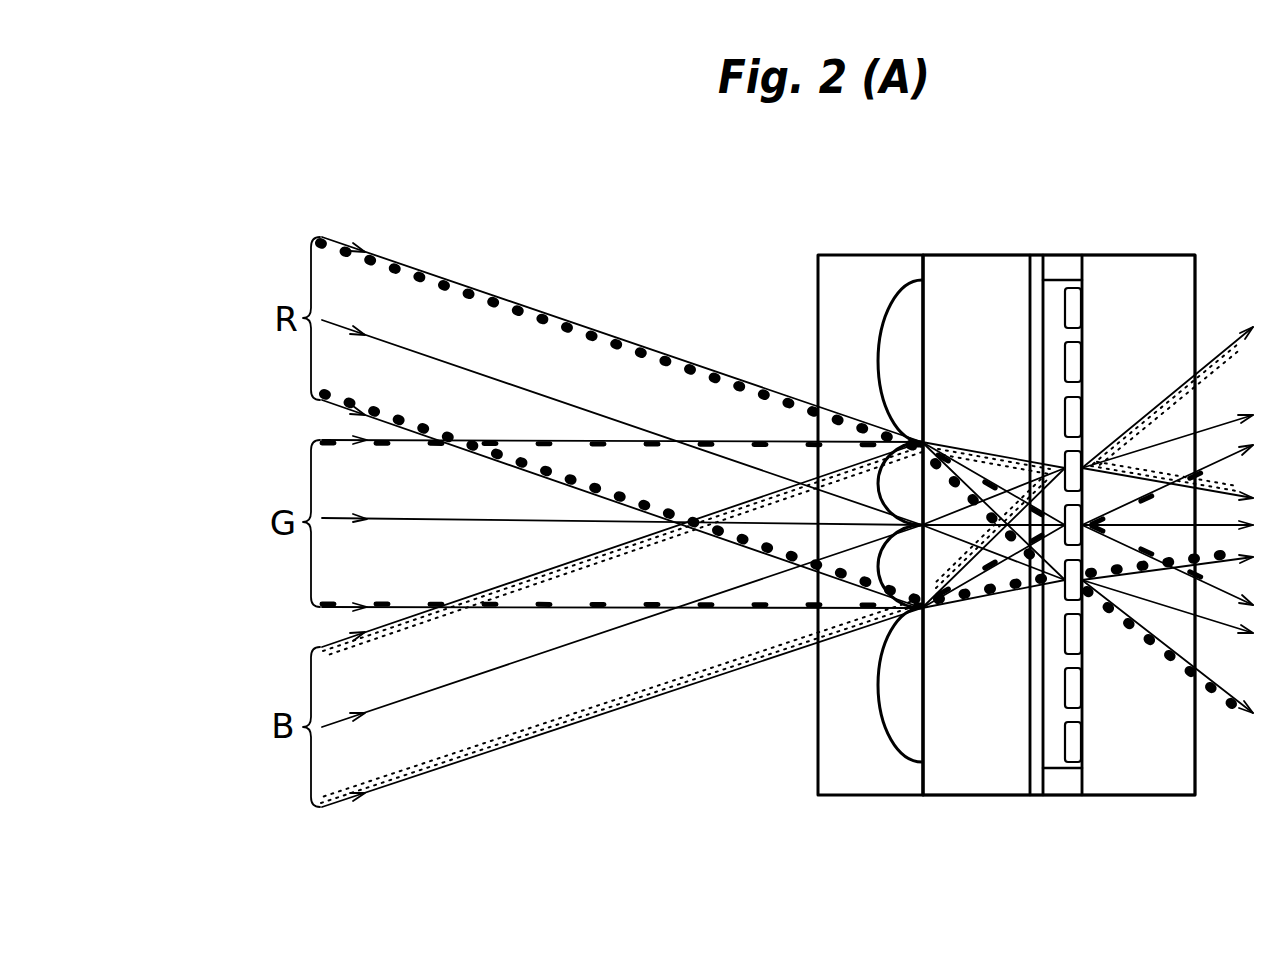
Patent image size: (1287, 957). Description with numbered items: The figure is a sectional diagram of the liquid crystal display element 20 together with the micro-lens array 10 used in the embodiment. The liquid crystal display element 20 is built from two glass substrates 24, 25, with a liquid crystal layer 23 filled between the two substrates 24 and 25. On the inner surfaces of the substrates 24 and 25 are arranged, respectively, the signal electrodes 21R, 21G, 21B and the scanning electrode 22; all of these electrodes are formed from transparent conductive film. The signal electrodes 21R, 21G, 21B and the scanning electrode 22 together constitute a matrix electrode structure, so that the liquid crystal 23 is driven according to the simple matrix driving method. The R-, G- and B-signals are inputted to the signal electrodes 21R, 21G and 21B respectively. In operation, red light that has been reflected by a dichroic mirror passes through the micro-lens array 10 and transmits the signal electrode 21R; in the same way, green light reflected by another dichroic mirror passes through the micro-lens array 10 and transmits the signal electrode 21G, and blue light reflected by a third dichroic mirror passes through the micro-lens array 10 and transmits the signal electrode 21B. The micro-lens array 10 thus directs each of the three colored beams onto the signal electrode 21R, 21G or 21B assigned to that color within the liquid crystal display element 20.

The micro-lens array 10 is at (858, 797).
The liquid crystal display element 20 is at (919, 800).
The signal electrode 21B is at (1073, 292).
The signal electrode 21G is at (1075, 357).
The signal electrode 21R is at (1077, 407).
The scanning electrode 22 is at (1037, 258).
The liquid crystal layer 23 is at (1058, 290).
The glass substrate 24 is at (943, 265).
The glass substrate 25 is at (1127, 270).